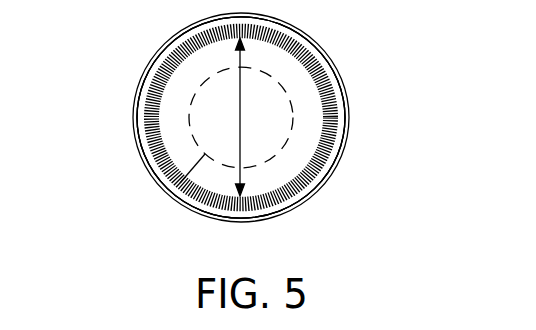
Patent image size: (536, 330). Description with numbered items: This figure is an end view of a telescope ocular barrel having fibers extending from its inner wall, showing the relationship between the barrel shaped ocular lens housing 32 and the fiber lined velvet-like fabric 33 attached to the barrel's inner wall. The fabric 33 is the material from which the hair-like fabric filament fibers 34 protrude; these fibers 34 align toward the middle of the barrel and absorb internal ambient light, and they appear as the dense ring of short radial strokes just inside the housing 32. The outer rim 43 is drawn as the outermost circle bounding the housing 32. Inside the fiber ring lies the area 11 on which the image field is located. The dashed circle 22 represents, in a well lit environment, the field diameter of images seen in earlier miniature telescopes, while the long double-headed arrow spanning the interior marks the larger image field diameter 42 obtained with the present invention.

The outer rim 43 is at (293, 31).
The barrel shaped ocular lens housing 32 is at (349, 114).
The fabric 33 is at (143, 138).
The field diameter of images seen in earlier miniature telescopes 22 is at (178, 193).
The fabric filament fibers 34 is at (297, 197).
The image field area 11 is at (293, 77).
The larger image field diameter 42 is at (238, 52).